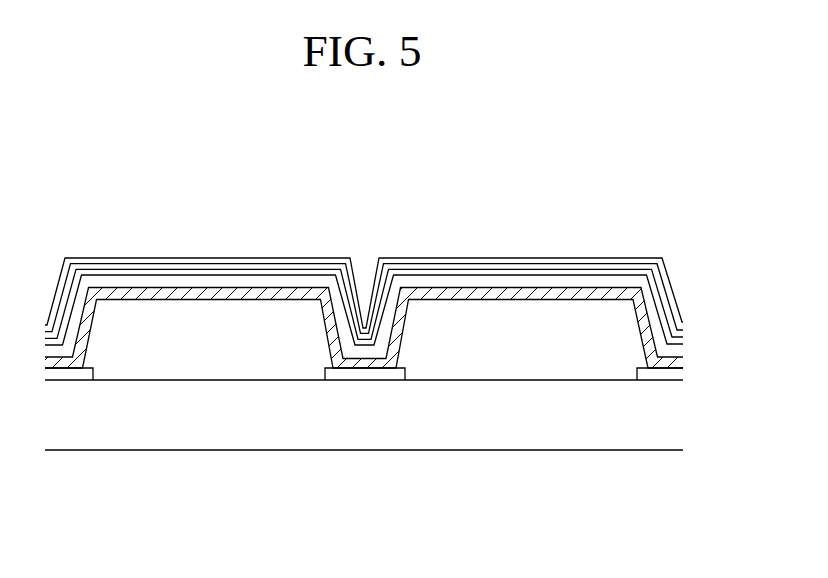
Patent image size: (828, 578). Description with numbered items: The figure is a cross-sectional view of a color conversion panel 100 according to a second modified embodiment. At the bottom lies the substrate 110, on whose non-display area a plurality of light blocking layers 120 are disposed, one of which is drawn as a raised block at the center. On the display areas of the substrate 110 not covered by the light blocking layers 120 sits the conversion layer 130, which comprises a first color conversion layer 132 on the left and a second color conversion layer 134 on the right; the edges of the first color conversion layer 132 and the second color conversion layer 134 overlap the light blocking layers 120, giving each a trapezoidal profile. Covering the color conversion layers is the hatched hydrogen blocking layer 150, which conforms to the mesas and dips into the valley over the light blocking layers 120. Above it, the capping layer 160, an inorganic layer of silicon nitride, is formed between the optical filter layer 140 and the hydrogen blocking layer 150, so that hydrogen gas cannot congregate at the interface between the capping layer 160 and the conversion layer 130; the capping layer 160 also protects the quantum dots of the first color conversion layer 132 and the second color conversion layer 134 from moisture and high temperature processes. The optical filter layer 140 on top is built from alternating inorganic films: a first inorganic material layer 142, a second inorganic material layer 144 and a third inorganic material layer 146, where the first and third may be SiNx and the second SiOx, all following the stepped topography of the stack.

The color conversion panel 100 is at (89, 169).
The substrate 110 is at (274, 432).
The light blocking layers 120 is at (359, 375).
The conversion layer 130 is at (371, 445).
The first color conversion layer 132 is at (189, 348).
The second color conversion layer 134 is at (503, 348).
The optical filter layer 140 is at (364, 248).
The first inorganic material layer 142 is at (467, 273).
The second inorganic material layer 144 is at (513, 267).
The third inorganic material layer 146 is at (453, 197).
The hydrogen blocking layer 150 is at (217, 293).
The capping layer 160 is at (280, 282).